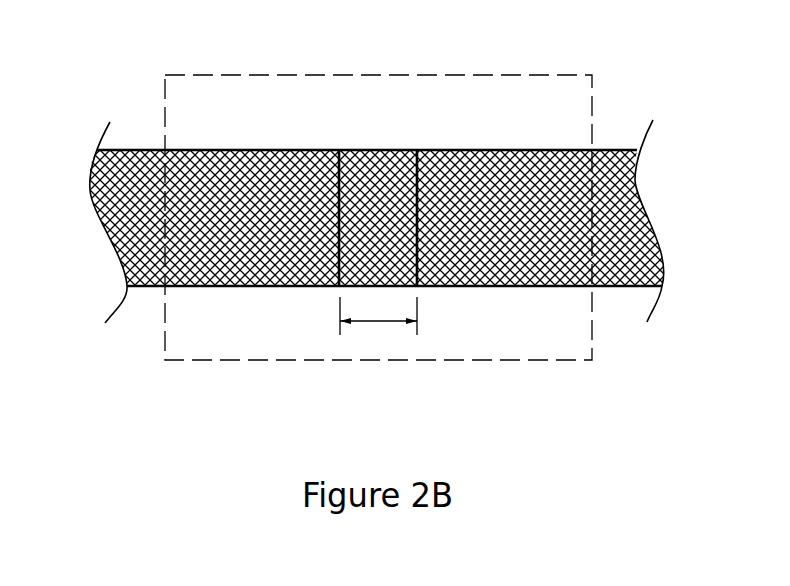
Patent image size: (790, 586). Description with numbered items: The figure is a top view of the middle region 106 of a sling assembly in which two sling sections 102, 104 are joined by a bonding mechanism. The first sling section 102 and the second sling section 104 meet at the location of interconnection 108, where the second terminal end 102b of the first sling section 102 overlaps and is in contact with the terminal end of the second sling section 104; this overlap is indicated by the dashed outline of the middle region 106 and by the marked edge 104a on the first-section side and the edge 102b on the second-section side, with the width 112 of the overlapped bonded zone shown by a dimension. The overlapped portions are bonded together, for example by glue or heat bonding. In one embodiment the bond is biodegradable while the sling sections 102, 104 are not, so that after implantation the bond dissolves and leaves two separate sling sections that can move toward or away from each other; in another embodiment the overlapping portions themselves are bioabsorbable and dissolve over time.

The first sling section 102 is at (133, 150).
The second sling section 104 is at (610, 150).
The location of interconnection 108 is at (368, 160).
The middle region 106 is at (592, 360).
The bond width 112 is at (380, 321).
The edge of second substrate 104a is at (330, 266).
The second terminal end of the first sling section 102b is at (430, 266).